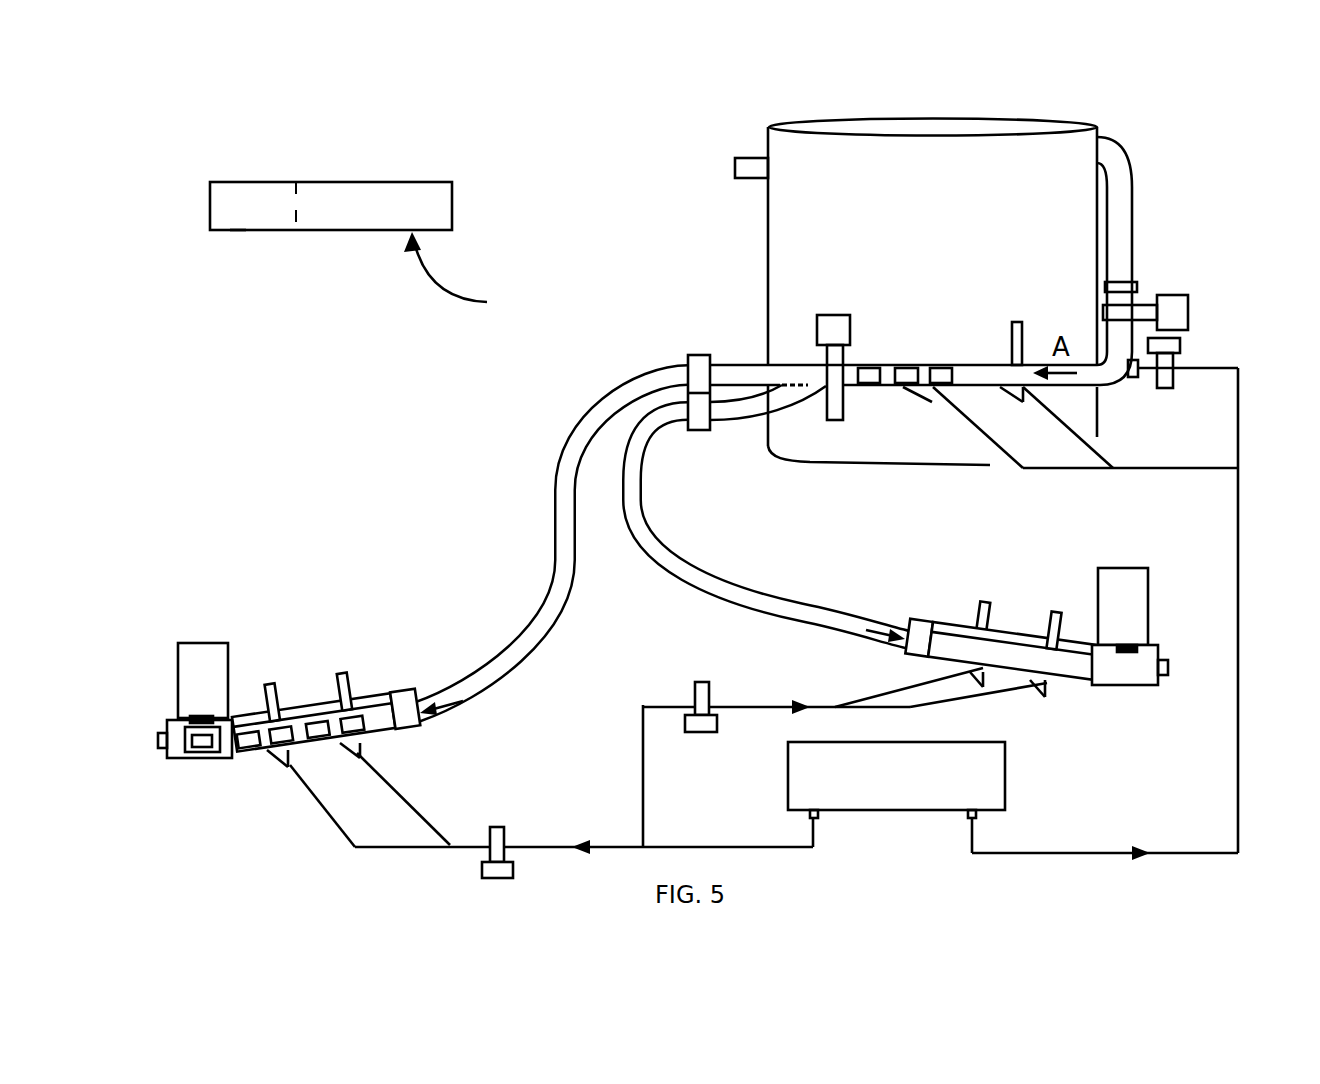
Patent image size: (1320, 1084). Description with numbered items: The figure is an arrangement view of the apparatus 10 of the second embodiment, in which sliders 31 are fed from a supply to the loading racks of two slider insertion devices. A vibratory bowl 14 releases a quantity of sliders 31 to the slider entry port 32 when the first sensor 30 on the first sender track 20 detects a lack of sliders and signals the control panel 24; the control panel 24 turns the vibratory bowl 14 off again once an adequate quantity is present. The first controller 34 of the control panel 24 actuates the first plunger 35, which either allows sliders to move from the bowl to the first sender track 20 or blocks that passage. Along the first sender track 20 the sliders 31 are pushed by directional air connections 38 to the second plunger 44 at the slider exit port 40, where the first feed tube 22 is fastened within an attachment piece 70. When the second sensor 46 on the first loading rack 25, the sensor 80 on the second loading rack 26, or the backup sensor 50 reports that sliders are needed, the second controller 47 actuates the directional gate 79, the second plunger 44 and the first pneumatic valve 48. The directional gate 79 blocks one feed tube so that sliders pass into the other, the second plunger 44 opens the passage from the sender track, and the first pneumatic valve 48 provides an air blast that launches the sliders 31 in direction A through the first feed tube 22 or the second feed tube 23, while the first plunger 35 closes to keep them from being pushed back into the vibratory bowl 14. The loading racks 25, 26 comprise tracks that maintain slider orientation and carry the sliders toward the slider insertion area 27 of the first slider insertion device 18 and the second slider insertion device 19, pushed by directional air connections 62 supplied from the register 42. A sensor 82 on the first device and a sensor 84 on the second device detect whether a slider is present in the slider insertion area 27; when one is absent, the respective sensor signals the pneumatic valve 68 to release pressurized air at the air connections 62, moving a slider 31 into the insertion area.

The apparatus 10 is at (910, 828).
The vibratory bowl 14 is at (763, 134).
The first slider insertion device 18 is at (213, 643).
The second slider insertion device 19 is at (1100, 568).
The first sender track 20 is at (905, 388).
The first feed tube 22 is at (597, 400).
The second feed tube 23 is at (848, 652).
The control panel 24 is at (466, 274).
The first loading rack 25 is at (378, 695).
The second loading rack 26 is at (1092, 623).
The slider insertion area 27 is at (190, 752).
The first sensor 30 is at (1015, 320).
The sliders 31 is at (862, 387).
The slider entry port 32 is at (1135, 253).
The first controller 34 is at (238, 230).
The first plunger 35 is at (1180, 295).
The directional air connections 38 is at (932, 388).
The slider exit port 40 is at (850, 343).
The register 42 is at (788, 765).
The second plunger 44 is at (835, 317).
The second sensor 46 is at (270, 683).
The second controller 47 is at (438, 182).
The first pneumatic valve 48 is at (1168, 388).
The backup sensor 50 is at (348, 672).
The directional air connections 62 is at (357, 748).
The pneumatic valve 68 is at (700, 683).
The attachment piece 70 is at (690, 355).
The directional gate 79 is at (790, 383).
The sensor 80 is at (1052, 608).
The sensor 82 is at (157, 733).
The sensor 84 is at (1170, 663).